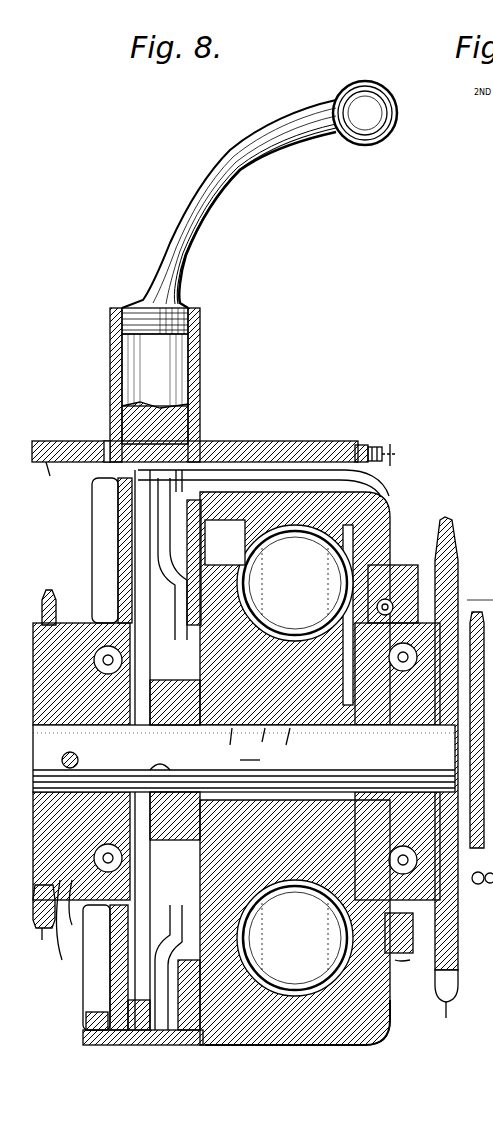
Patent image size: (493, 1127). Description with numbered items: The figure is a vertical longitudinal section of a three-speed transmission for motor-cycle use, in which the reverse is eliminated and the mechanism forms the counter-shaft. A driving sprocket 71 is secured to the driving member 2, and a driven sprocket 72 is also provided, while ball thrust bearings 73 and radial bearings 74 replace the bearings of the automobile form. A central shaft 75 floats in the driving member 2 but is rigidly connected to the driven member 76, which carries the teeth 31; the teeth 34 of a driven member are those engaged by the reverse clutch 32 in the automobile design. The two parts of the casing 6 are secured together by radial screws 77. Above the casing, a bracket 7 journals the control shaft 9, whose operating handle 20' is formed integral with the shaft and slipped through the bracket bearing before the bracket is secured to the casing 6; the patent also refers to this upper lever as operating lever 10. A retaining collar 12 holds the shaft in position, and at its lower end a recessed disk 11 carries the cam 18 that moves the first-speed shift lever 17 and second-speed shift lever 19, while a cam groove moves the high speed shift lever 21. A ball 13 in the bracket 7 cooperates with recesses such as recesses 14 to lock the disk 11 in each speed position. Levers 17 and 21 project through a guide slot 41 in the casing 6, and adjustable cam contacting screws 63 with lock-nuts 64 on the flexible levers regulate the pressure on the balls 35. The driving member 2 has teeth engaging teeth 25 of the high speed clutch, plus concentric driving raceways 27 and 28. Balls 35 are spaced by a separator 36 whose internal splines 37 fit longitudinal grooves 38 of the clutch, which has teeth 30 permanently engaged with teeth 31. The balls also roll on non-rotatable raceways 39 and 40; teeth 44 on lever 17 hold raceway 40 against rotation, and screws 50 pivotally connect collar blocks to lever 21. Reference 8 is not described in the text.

The operating lever 20' is at (259, 194).
The retaining collar 12 is at (200, 323).
The bracket 7 is at (202, 365).
The control shaft 9 is at (155, 389).
The cam 18 is at (195, 444).
The ball 13 is at (108, 438).
The recessed disk 11 is at (68, 470).
The lock-nuts 64 is at (322, 444).
The adjustable cam contacting screws 63 is at (338, 450).
The operating lever 10 is at (398, 455).
The first-speed shift lever 17 is at (380, 478).
The casing 6 is at (392, 512).
The separator 36 is at (295, 583).
The guide slot 41 is at (216, 470).
The high speed shift lever 21 is at (205, 440).
The second-speed shift lever 19 is at (286, 468).
The non-rotatable raceway 40 is at (302, 468).
The ball thrust bearings 73 is at (400, 590).
The teeth 25 is at (312, 728).
The driving ball raceway 27 is at (338, 728).
The teeth 30 is at (90, 612).
The teeth 31 is at (96, 630).
The screws 50 is at (244, 758).
The teeth 44 is at (235, 739).
The longitudinal grooves 38 is at (247, 761).
The non-rotatable raceway 39 is at (265, 742).
The internal splines 37 is at (290, 745).
The recesses 14 is at (175, 725).
The driving member 2 is at (382, 1020).
The balls 35 is at (304, 1046).
The driving ball raceway 28 is at (356, 1046).
The radial screws 77 is at (102, 1045).
The driven member 76 is at (65, 931).
The teeth 34 is at (70, 913).
The reverse clutch 32 is at (44, 921).
The radial bearings 74 is at (405, 963).
The driving sprocket 71 is at (449, 1019).
The central shaft 75 is at (471, 777).
The driven sprocket 72 is at (482, 891).
The gear 8 is at (480, 607).